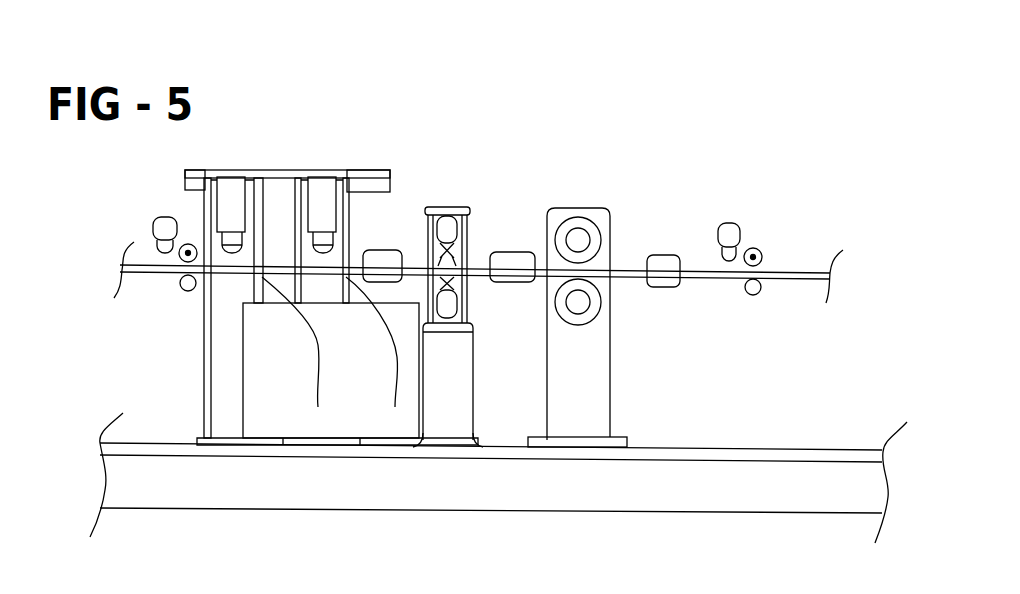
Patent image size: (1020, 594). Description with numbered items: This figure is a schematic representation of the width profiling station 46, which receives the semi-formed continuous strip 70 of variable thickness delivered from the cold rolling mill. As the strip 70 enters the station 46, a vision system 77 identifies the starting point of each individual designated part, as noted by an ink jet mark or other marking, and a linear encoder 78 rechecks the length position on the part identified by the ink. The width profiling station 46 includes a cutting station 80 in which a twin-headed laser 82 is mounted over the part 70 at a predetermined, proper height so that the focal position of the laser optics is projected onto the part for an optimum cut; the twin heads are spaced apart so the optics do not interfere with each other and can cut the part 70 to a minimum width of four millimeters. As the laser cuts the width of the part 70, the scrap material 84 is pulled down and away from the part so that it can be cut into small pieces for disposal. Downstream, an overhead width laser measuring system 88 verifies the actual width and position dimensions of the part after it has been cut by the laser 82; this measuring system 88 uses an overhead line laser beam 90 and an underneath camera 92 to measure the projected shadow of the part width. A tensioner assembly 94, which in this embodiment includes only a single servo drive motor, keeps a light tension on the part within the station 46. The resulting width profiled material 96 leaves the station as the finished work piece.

The width profiling station 46 is at (505, 120).
The semi-formed continuous strip 70 is at (122, 262).
The vision system 77 is at (157, 228).
The linear encoder 78 is at (182, 260).
The cutting station 80 is at (277, 172).
The twin-headed laser 82 is at (233, 215).
The scrap material 84 is at (387, 333).
The overhead width laser measuring system 88 is at (480, 225).
The overhead line laser beam 90 is at (440, 224).
The underneath camera 92 is at (455, 303).
The tensioner assembly 94 is at (632, 233).
The width profiled material 96 is at (795, 278).